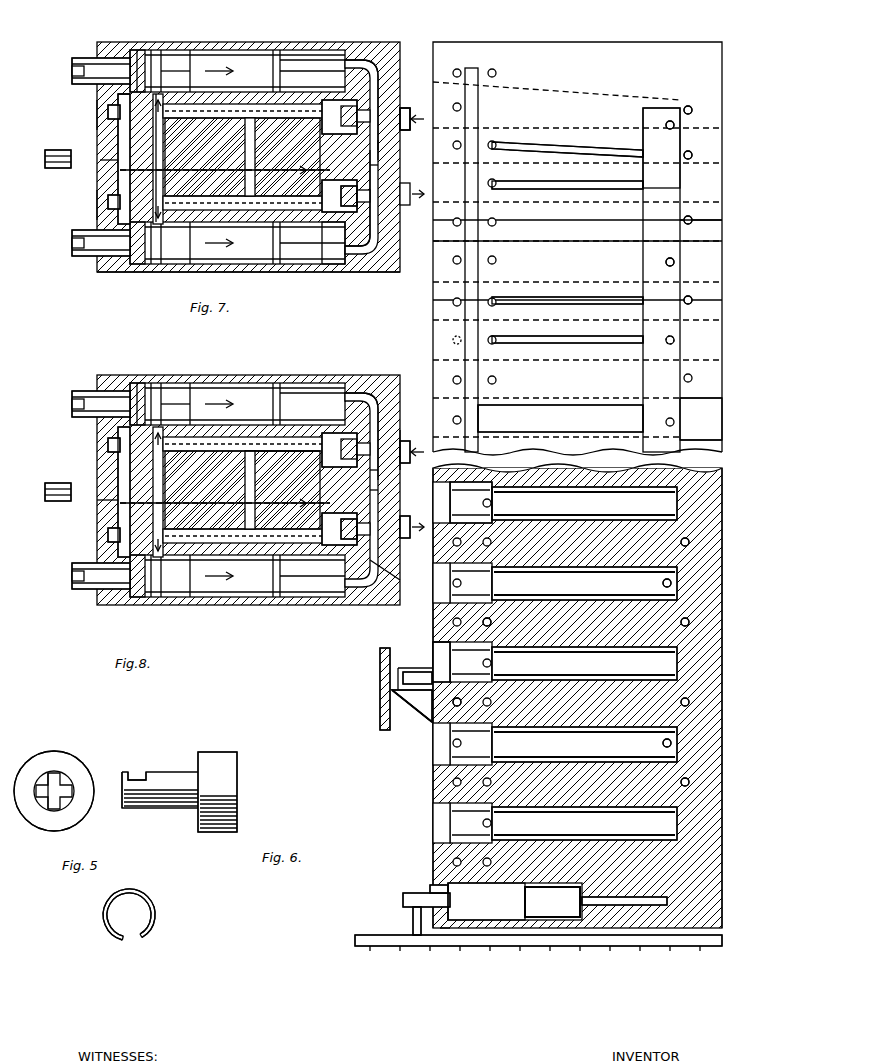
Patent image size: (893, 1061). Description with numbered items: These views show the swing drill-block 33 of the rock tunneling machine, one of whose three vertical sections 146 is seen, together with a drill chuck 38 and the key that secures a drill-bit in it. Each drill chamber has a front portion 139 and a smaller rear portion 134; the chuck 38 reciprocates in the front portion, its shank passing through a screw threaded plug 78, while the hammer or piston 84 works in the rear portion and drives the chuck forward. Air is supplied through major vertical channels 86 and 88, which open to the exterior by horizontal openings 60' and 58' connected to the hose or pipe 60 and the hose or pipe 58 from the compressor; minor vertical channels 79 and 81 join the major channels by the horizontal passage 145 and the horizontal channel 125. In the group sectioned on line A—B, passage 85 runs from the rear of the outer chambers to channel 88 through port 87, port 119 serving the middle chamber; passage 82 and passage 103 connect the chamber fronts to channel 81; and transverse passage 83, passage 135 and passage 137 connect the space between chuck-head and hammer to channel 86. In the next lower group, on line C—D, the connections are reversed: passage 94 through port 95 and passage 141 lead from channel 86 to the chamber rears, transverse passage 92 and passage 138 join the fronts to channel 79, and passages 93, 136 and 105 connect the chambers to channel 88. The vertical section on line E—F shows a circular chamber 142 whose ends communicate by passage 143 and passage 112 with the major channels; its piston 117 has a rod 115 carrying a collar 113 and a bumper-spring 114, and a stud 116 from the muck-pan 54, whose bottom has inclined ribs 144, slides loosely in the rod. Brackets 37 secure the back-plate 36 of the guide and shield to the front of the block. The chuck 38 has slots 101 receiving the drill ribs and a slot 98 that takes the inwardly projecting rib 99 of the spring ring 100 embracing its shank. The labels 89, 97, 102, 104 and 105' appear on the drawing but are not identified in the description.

In FIG. 8, the drill-block 33 is at (378, 490).
In FIG. 6, the back-plate 36 is at (380, 700).
In FIG. 6, the brackets 37 is at (415, 700).
In FIG. 7, the drill carrying chuck 38 is at (80, 70).
In FIG. 8, the drill carrying chuck 38 is at (78, 403).
In FIG. 5, the drill carrying chuck 38 is at (45, 758).
In FIG. 6, the muck-pan 54 is at (703, 946).
In FIG. 7, the hose or pipe 58 is at (375, 196).
In FIG. 8, the hose or pipe 58 is at (375, 530).
In FIG. 6, the hose or pipe 58 is at (724, 419).
In FIG. 8, the horizontal opening 58' is at (413, 541).
In FIG. 7, the hose or pipe 60 is at (414, 121).
In FIG. 8, the hose or pipe 60 is at (414, 444).
In FIG. 7, the horizontal opening 60' is at (417, 76).
In FIG. 7, the screw threaded plug 78 is at (122, 98).
In FIG. 6, the screw threaded plug 78 is at (440, 612).
In FIG. 7, the minor vertical channel 79 is at (112, 112).
In FIG. 8, the minor vertical channel 79 is at (112, 445).
In FIG. 7, the minor vertical channel 81 is at (140, 170).
In FIG. 8, the minor vertical channel 81 is at (140, 503).
In FIG. 7, the passage 82 is at (122, 115).
In FIG. 6, the passage 82 is at (445, 650).
In FIG. 7, the transverse passage 83 is at (158, 100).
In FIG. 6, the transverse passage 83 is at (492, 622).
In FIG. 7, the hammer or piston 84 is at (372, 64).
In FIG. 8, the hammer or piston 84 is at (300, 398).
In FIG. 7, the passage 85 is at (374, 95).
In FIG. 6, the passage 85 is at (690, 226).
In FIG. 7, the major vertical channel 86 is at (345, 120).
In FIG. 8, the major vertical channel 86 is at (345, 445).
In FIG. 6, the major vertical channel 86 is at (655, 118).
In FIG. 7, the port 87 is at (376, 168).
In FIG. 6, the port 87 is at (692, 110).
In FIG. 7, the major vertical channel 88 is at (350, 200).
In FIG. 8, the major vertical channel 88 is at (357, 525).
In FIG. 7, the cylinder head 89 is at (338, 240).
In FIG. 7, the transverse passage 92 is at (300, 272).
In FIG. 8, the transverse passage 92 is at (122, 435).
In FIG. 6, the transverse passage 92 is at (415, 682).
In FIG. 7, the passage 93 is at (264, 271).
In FIG. 8, the passage 93 is at (112, 535).
In FIG. 6, the passage 93 is at (440, 720).
In FIG. 7, the passage 94 is at (251, 318).
In FIG. 6, the passage 94 is at (692, 155).
In FIG. 8, the port 95 is at (376, 440).
In FIG. 8, the passage 97 is at (398, 576).
In FIG. 5, the slot 98 is at (140, 773).
In FIG. 5, the inwardly projecting rib 99 is at (142, 897).
In FIG. 5, the spring ring 100 is at (104, 913).
In FIG. 5, the slots 101 is at (117, 785).
In FIG. 7, the passage 102 is at (380, 272).
In FIG. 7, the passage 103 is at (110, 165).
In FIG. 7, the passage 104 is at (320, 272).
In FIG. 7, the passage 105 is at (318, 318).
In FIG. 8, the passage 105 is at (60, 525).
In FIG. 6, the passage 105 is at (633, 362).
In FIG. 6, the passage 105' is at (567, 192).
In FIG. 6, the passage 112 is at (560, 915).
In FIG. 6, the collar 113 is at (438, 885).
In FIG. 6, the bumper-spring 114 is at (450, 885).
In FIG. 6, the piston-rod 115 is at (425, 895).
In FIG. 6, the stud 116 is at (413, 921).
In FIG. 6, the piston 117 is at (470, 915).
In FIG. 7, the port 119 is at (380, 150).
In FIG. 6, the port 119 is at (674, 125).
In FIG. 7, the horizontal channel 125 is at (300, 255).
In FIG. 8, the horizontal channel 125 is at (255, 590).
In FIG. 6, the horizontal channel 125 is at (600, 425).
In FIG. 7, the rear portion 134 is at (180, 60).
In FIG. 8, the rear portion 134 is at (180, 400).
In FIG. 6, the rear portion 134 is at (660, 503).
In FIG. 7, the passage 135 is at (300, 62).
In FIG. 8, the passage 136 is at (260, 530).
In FIG. 6, the passage 136 is at (600, 148).
In FIG. 7, the passage 137 is at (112, 200).
In FIG. 6, the passage 137 is at (570, 250).
In FIG. 6, the passage 138 is at (470, 330).
In FIG. 7, the front portion 139 is at (137, 52).
In FIG. 8, the front portion 139 is at (137, 385).
In FIG. 8, the passage 141 is at (410, 455).
In FIG. 6, the passage 141 is at (674, 342).
In FIG. 6, the chamber 142 is at (447, 925).
In FIG. 6, the passage 143 is at (417, 945).
In FIG. 6, the ribs 144 is at (660, 905).
In FIG. 7, the horizontal passage 145 is at (325, 70).
In FIG. 8, the horizontal passage 145 is at (255, 400).
In FIG. 6, the vertical section 146 is at (564, 50).
In FIG. 6, the section line A—B A is at (440, 220).
In FIG. 6, the section line A— B is at (702, 220).
In FIG. 6, the section line C—D C is at (440, 301).
In FIG. 6, the section line C— D is at (740, 300).
In FIG. 8, the section line E—F E is at (32, 490).
In FIG. 8, the section line E— F is at (321, 492).